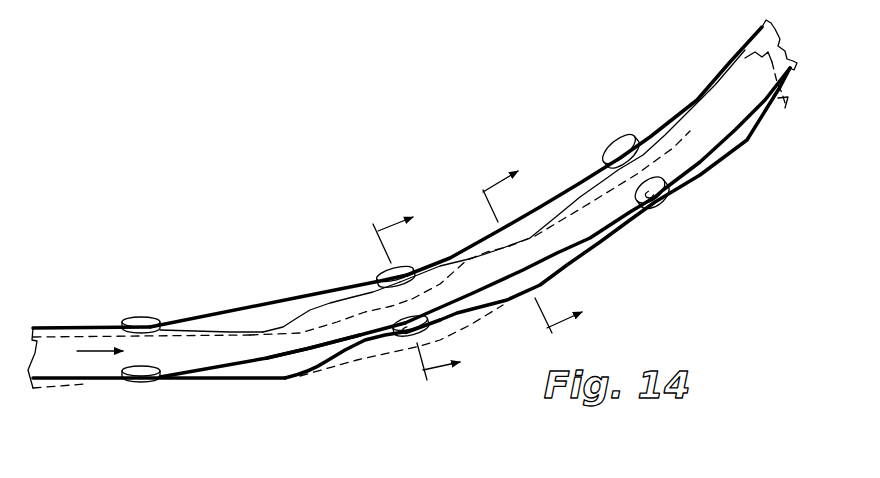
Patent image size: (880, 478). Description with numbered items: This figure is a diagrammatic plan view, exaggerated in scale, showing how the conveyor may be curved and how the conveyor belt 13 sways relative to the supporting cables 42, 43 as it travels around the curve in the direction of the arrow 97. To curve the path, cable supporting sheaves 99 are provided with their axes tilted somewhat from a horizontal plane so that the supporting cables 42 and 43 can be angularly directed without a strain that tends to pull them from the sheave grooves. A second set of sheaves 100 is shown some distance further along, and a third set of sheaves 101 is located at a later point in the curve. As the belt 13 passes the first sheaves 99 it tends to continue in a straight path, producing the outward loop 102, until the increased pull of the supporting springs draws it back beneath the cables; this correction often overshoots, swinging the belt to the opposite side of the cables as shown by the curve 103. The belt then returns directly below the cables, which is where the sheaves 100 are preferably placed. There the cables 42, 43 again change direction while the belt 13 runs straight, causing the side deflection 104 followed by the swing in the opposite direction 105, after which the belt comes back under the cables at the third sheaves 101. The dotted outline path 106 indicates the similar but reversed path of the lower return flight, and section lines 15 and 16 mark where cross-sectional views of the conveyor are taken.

The conveyor belt 13 is at (308, 333).
The section line 15- 15 is at (408, 302).
The section line 16- 16 is at (519, 262).
The supporting cable 42 is at (238, 310).
The supporting cable 43 is at (243, 363).
The arrow 97 is at (95, 351).
The cable supporting sheaves 99 is at (147, 317).
The second set of sheaves 100 is at (385, 270).
The third set of sheaves 101 is at (620, 146).
The outward loop 102 is at (260, 380).
The curve 103 is at (347, 290).
The side deflection 104 is at (556, 270).
The opposite direction deflection 105 is at (587, 178).
The dotted outline path 106 is at (750, 115).